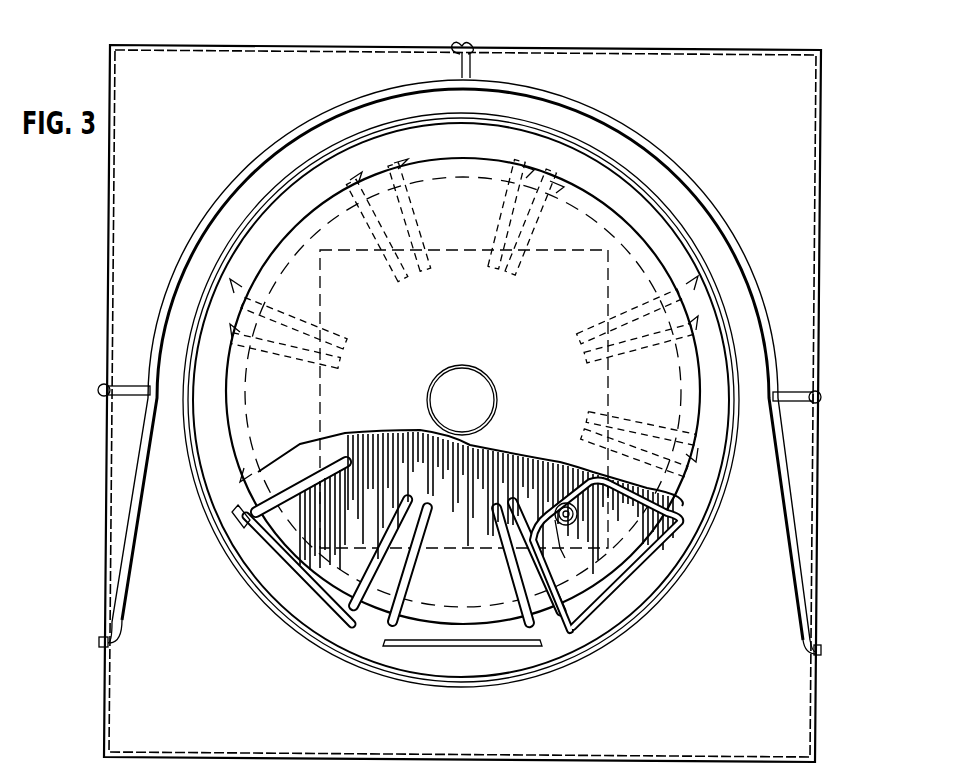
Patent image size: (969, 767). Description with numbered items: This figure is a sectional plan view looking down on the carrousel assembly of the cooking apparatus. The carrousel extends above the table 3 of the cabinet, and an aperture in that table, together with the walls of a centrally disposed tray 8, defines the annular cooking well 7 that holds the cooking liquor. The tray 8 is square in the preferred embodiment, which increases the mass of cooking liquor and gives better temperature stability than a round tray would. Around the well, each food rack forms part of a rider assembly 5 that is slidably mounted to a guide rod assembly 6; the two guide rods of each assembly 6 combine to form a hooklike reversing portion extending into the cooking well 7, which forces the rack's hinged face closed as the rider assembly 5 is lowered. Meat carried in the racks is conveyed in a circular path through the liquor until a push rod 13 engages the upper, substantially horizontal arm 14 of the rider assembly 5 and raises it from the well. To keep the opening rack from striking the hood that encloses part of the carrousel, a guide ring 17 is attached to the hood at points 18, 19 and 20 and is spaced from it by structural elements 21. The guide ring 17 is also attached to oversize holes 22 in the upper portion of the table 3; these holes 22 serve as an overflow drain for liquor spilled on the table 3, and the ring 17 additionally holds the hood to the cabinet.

The table 3 is at (800, 713).
The rider assembly 5 is at (682, 518).
The guide rod assembly 6 is at (672, 653).
The annular cooking well 7 is at (472, 610).
The tray 8 is at (567, 302).
The push rod 13 is at (580, 514).
The upper horizontal arm 14 is at (562, 528).
The guide ring 17 is at (527, 92).
The attachment point 18 is at (102, 384).
The attachment point 19 is at (445, 56).
The attachment point 20 is at (818, 392).
The structural elements 21 is at (124, 396).
The oversize holes 22 is at (99, 650).